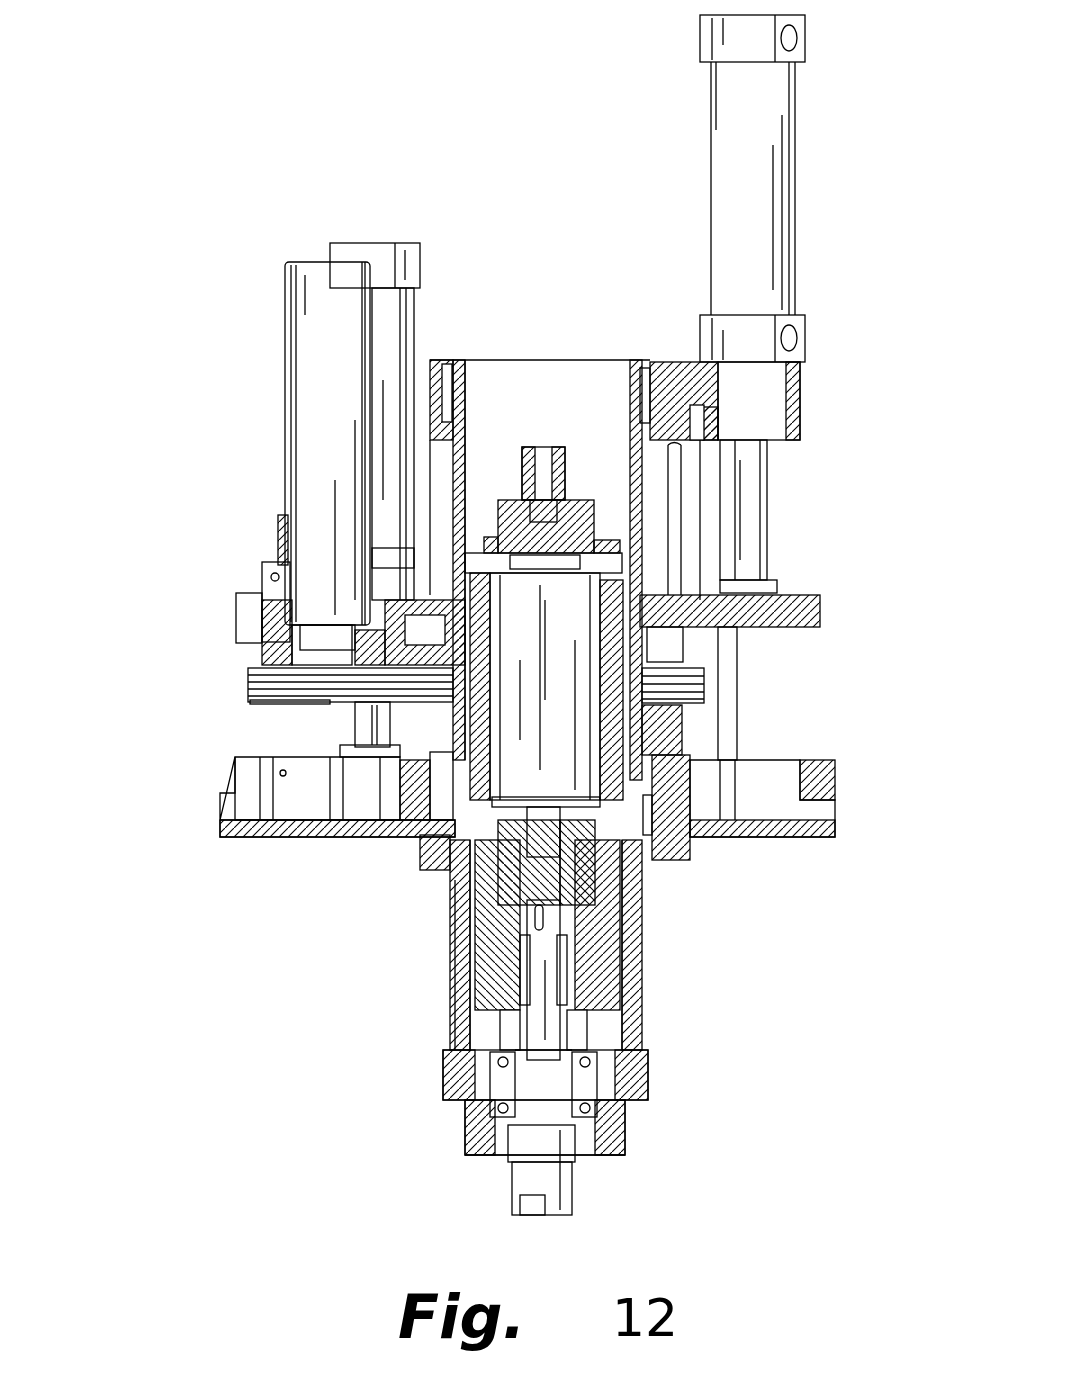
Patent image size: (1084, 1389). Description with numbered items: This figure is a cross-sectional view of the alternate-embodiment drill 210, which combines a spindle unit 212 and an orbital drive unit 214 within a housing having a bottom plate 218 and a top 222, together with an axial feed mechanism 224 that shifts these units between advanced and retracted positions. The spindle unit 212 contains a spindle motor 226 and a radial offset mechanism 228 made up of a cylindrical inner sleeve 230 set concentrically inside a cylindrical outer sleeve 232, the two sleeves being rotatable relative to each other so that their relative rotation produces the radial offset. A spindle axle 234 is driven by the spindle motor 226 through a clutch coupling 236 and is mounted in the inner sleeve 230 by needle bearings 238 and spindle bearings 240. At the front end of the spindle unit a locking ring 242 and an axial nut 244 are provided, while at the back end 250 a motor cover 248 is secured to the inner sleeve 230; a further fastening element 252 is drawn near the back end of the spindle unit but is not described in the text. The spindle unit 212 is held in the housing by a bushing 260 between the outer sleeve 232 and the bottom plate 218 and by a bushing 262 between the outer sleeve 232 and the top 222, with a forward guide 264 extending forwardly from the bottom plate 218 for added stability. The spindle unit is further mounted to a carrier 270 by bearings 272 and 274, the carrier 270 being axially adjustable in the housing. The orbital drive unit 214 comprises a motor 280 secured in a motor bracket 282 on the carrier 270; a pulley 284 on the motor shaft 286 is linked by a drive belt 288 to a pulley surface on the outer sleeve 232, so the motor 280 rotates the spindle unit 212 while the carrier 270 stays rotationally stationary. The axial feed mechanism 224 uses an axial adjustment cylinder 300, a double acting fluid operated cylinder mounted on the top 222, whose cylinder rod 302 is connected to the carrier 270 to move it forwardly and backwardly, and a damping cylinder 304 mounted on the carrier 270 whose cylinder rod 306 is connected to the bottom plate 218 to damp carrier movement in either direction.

The drill 210 is at (300, 125).
The spindle unit 212 is at (362, 996).
The orbital drive unit 214 is at (238, 568).
The bottom plate 218 is at (232, 800).
The top 222 is at (662, 362).
The axial feed mechanism 224 is at (660, 68).
The spindle motor 226 is at (560, 686).
The radial offset mechanism 228 is at (437, 1057).
The inner sleeve 230 is at (480, 892).
The outer sleeve 232 is at (462, 938).
The spindle axle 234 is at (560, 1160).
The clutch coupling 236 is at (578, 888).
The needle bearings 238 is at (562, 972).
The spindle bearings 240 is at (600, 1060).
The locking ring 242 is at (640, 1090).
The axial nut 244 is at (635, 1135).
The motor cover 248 is at (450, 1115).
The back end 250 is at (585, 500).
The bolt 252 is at (506, 458).
The bushing 260 is at (670, 800).
The bushing 262 is at (455, 360).
The forward guide 264 is at (425, 855).
The carrier 270 is at (810, 612).
The bearing 272 is at (680, 630).
The bearing 274 is at (680, 740).
The motor 280 is at (325, 351).
The motor bracket 282 is at (280, 535).
The pulley 284 is at (300, 708).
The shaft 286 is at (330, 622).
The drive belt 288 is at (248, 672).
The axial adjustment cylinder 300 is at (765, 190).
The cylinder rod 302 is at (750, 500).
The damping cylinder 304 is at (395, 328).
The cylinder rod 306 is at (365, 722).